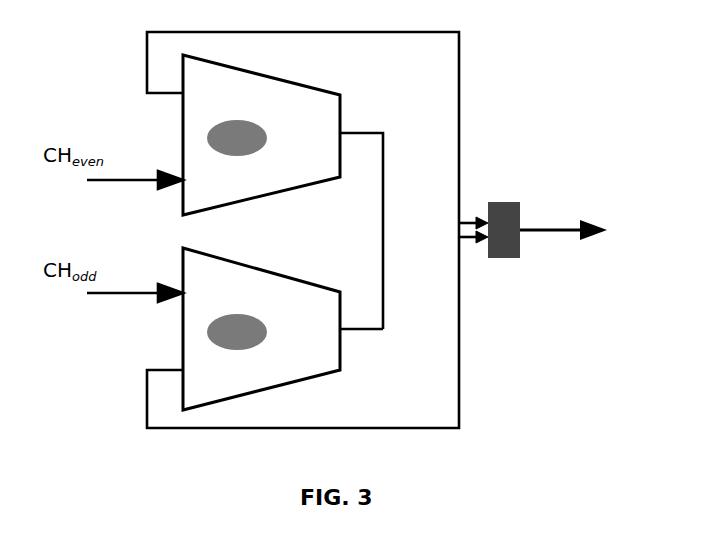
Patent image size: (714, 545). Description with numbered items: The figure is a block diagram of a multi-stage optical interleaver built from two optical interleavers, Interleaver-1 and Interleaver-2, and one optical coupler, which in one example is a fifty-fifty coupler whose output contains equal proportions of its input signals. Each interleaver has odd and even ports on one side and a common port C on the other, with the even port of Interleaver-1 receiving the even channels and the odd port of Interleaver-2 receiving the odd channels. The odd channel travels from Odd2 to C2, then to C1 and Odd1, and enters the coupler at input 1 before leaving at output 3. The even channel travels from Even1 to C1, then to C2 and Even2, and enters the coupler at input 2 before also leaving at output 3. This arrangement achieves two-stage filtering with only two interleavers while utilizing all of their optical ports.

The coupler input 1 is at (335, 192).
The coupler input 2 is at (335, 320).
The coupler output 3 is at (541, 245).